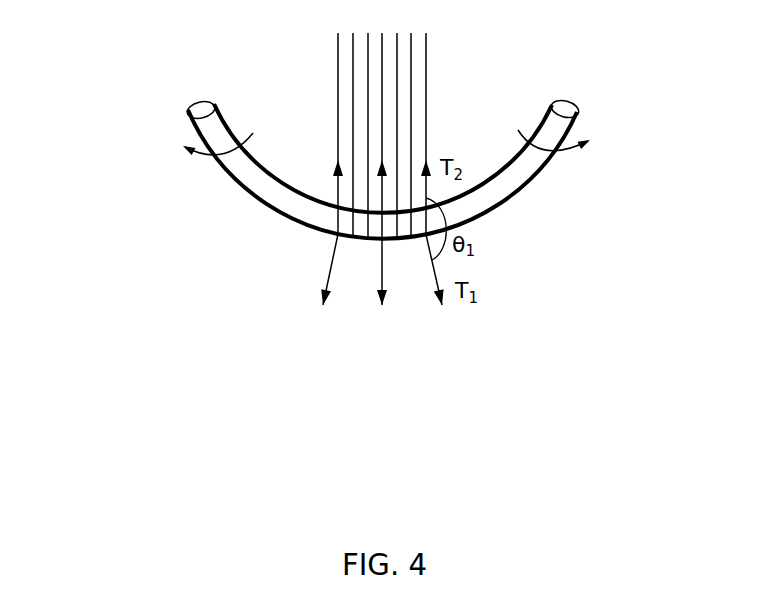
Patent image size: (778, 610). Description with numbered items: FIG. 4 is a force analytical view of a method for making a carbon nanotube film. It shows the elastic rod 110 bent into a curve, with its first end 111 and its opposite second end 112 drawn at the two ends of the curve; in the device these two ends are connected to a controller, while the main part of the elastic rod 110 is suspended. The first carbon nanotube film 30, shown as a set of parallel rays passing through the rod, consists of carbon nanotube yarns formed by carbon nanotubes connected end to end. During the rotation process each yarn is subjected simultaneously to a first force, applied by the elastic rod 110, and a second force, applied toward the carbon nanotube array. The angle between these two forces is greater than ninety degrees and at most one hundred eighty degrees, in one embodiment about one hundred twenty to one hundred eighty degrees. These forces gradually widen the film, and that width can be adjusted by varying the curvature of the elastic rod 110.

The first carbon nanotube film 30 is at (426, 110).
The elastic rod 110 is at (507, 182).
The first end 111 is at (185, 107).
The second end 112 is at (582, 110).